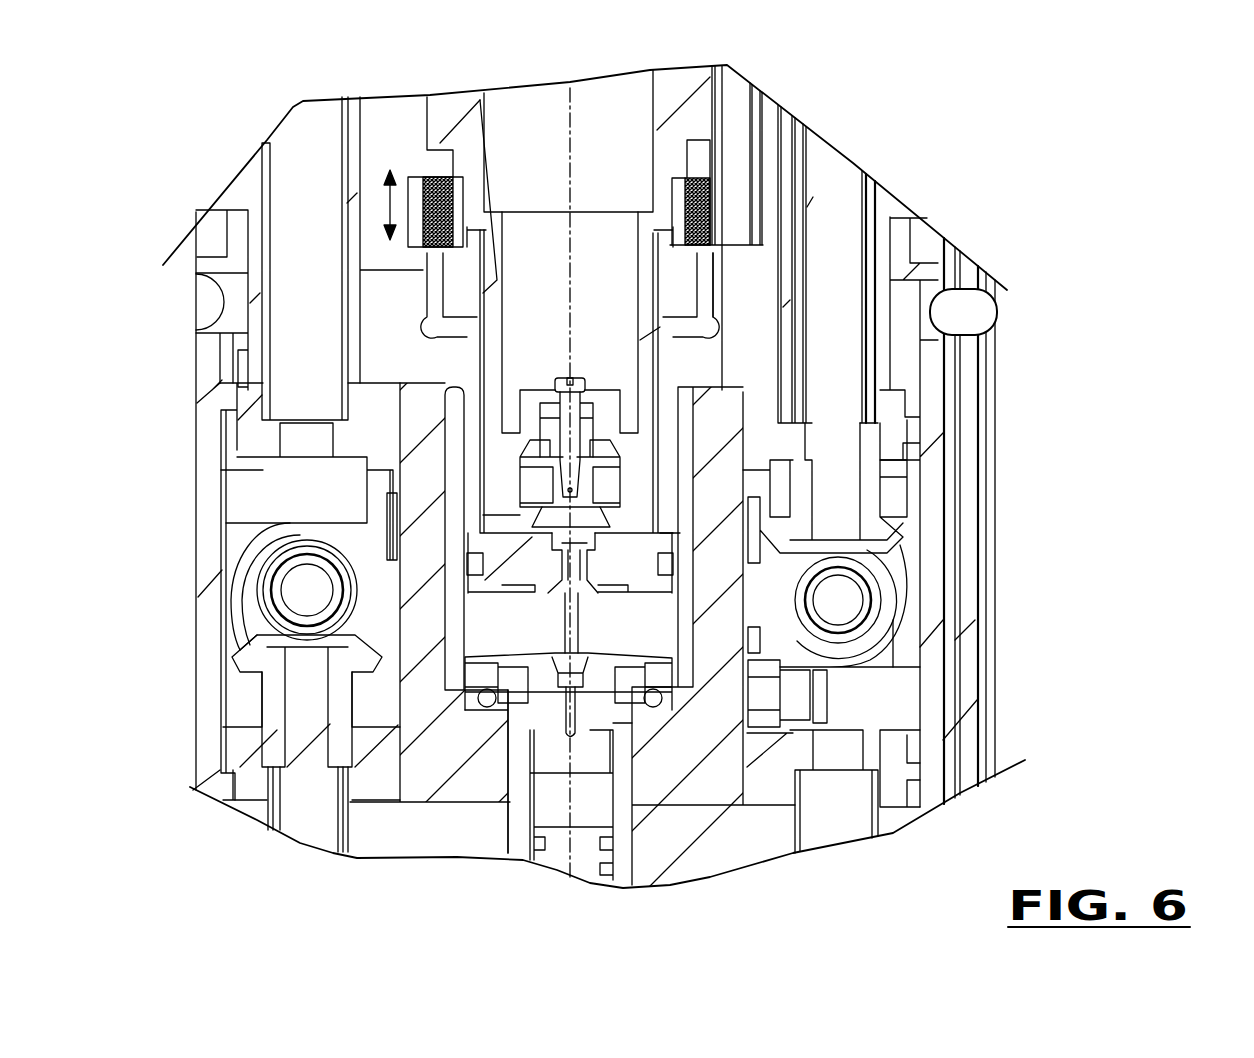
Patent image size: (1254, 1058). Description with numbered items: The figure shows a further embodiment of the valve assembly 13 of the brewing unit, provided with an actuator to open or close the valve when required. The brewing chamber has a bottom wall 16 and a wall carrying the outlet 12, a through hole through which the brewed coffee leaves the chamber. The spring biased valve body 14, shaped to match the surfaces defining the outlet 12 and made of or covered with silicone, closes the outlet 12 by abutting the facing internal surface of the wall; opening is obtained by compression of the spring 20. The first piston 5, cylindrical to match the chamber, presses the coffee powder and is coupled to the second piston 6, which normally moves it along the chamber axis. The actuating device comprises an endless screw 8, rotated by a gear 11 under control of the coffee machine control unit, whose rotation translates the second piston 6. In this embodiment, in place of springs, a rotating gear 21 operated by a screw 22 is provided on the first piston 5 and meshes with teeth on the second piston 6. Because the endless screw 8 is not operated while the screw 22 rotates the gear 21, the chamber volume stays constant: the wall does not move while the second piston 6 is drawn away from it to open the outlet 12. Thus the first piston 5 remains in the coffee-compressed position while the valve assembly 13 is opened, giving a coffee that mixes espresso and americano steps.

The first piston 5 is at (630, 555).
The second piston 6 is at (673, 100).
The endless screw 8 is at (827, 214).
The gear 11 is at (837, 603).
The outlet 12 is at (540, 648).
The valve assembly 13 is at (630, 448).
The valve body 14 is at (595, 520).
The bottom wall 16 is at (548, 580).
The spring 20 is at (557, 413).
The rotating gear 21 is at (670, 223).
The screw 22 is at (733, 125).